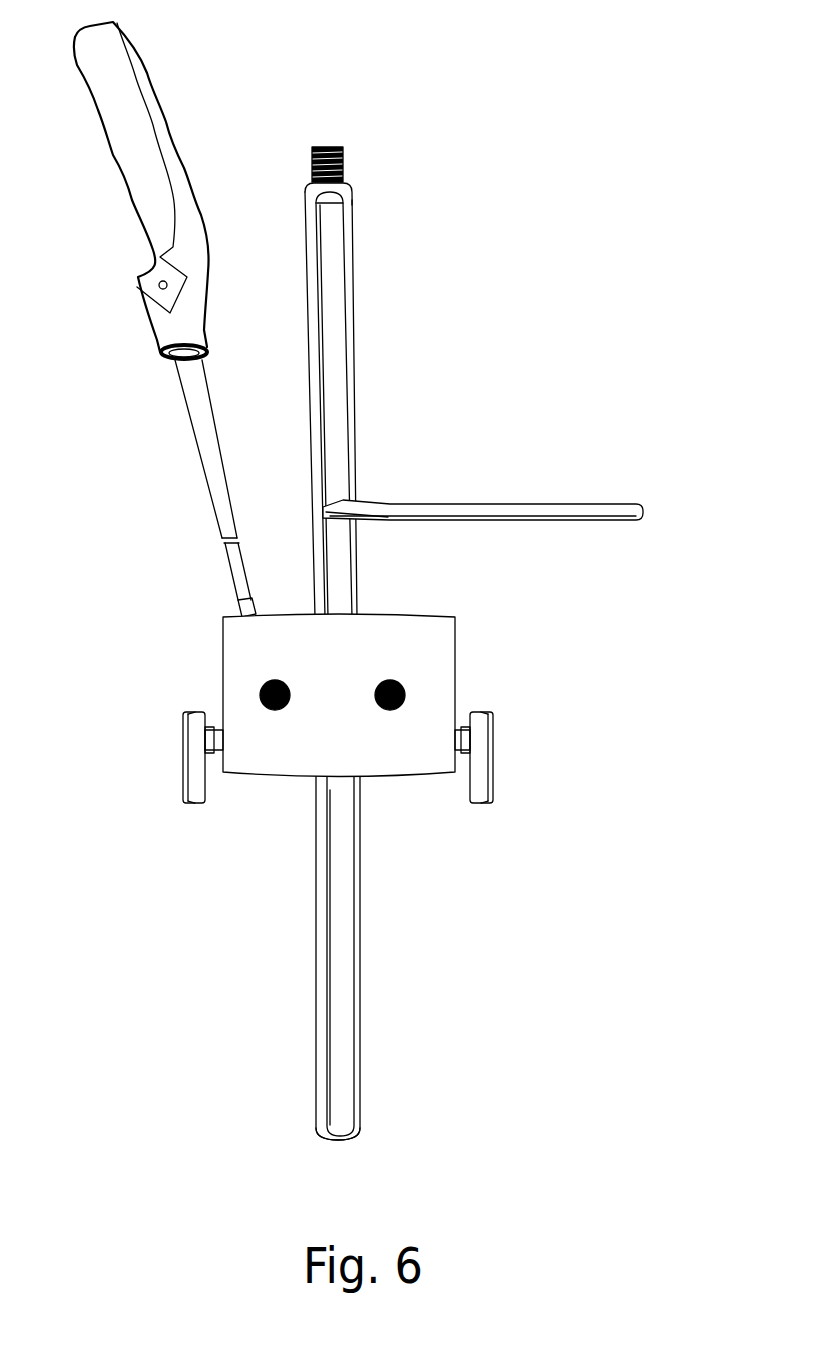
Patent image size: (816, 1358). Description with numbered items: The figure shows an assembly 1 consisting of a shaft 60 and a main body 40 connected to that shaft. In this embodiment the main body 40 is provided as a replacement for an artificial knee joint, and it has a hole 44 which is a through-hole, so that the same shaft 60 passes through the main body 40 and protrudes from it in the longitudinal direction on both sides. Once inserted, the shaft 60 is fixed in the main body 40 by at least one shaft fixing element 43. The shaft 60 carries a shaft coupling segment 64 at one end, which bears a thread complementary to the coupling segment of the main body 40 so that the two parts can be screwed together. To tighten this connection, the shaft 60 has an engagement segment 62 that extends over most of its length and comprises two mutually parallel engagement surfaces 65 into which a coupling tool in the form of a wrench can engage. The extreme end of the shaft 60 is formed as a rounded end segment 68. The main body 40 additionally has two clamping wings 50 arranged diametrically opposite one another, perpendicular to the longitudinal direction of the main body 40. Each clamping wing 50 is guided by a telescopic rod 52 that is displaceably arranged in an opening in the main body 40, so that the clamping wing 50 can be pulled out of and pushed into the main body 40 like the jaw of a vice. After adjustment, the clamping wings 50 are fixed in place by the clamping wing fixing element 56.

The surgical instrument assembly 1 is at (375, 186).
The main body 40 is at (344, 667).
The shaft fixing element 43 is at (258, 692).
The hole 44 is at (362, 613).
The clamping wings 50 is at (334, 797).
The telescopic rod 52 is at (463, 742).
The clamping wing fixing element 56 is at (237, 604).
The shaft 60 is at (389, 640).
The engagement segment 62 is at (335, 282).
The shaft coupling segment 64 is at (333, 146).
The engagement surfaces 65 is at (342, 997).
The rounded end segment 68 is at (345, 1128).